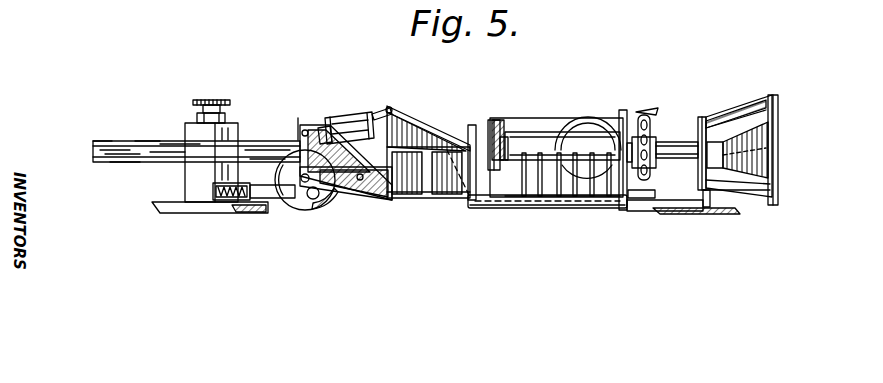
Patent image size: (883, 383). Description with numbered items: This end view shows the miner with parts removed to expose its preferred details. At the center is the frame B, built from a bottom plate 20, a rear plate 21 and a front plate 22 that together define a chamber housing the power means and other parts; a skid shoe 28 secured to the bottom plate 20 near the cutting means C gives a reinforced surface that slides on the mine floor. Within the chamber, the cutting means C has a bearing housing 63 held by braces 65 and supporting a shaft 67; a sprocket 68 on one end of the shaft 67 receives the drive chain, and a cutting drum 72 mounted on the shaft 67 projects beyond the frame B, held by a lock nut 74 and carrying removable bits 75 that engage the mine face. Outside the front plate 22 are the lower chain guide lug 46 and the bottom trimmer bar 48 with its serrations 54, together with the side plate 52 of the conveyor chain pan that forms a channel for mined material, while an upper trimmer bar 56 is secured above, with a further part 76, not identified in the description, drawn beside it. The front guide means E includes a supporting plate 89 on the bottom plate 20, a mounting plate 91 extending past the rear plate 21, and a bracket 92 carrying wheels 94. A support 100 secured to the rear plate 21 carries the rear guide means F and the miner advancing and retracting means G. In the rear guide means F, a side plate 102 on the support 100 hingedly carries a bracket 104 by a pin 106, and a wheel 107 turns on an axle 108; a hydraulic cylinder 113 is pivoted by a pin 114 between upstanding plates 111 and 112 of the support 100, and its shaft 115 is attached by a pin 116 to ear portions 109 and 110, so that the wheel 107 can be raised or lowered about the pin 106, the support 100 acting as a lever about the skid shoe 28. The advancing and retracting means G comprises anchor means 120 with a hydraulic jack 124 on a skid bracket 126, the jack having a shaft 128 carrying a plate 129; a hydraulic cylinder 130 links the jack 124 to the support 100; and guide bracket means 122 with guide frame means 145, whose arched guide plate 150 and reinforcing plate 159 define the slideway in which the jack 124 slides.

The reinforcing plate 159 is at (93, 152).
The guide frame means 145 is at (108, 140).
The arched guide plate 150 is at (145, 141).
The guide bracket means 122 is at (120, 167).
The hydraulic jack 124 is at (190, 178).
The plate 129 is at (213, 101).
The shaft 128 is at (197, 118).
The anchor means 120 is at (207, 76).
The skid bracket 126 is at (215, 210).
The hydraulic cylinder 130 is at (266, 186).
The axle 108 is at (300, 182).
The wheel 107 is at (314, 200).
The pin 106 is at (332, 193).
The side plate 102 is at (362, 181).
The bracket 104 is at (300, 142).
The ear portion 109 is at (305, 129).
The pin 116 is at (299, 118).
The ear portion 110 is at (325, 126).
The shaft 115 is at (345, 117).
The hydraulic cylinder 113 is at (360, 120).
The pin 114 is at (390, 107).
The upstanding plate 112 is at (425, 124).
The upstanding plate 111 is at (398, 118).
The support 100 is at (428, 183).
The mounting plate 91 is at (456, 200).
The rear plate 21 is at (468, 130).
The skid shoe 28 is at (487, 207).
The bottom plate 20 is at (526, 206).
The bracket 92 is at (510, 118).
The sprocket 68 is at (504, 121).
The bearing housing 63 is at (555, 134).
The wheels 94 is at (586, 118).
The braces 65 is at (575, 198).
The supporting plate 89 is at (545, 200).
The front plate 22 is at (623, 120).
The upper trimmer bar 56 is at (645, 114).
The collar 76 is at (650, 138).
The shaft 67 is at (678, 145).
The cutting drum 72 is at (757, 106).
The lock nut 74 is at (765, 163).
The removable bits 75 is at (778, 105).
The side plate 52 is at (720, 206).
The serrations 54 is at (694, 215).
The lower chain guide lug 46 is at (655, 193).
The bottom trimmer bar 48 is at (640, 211).
The miner advancing and retracting means G is at (137, 111).
The rear guide means F is at (320, 224).
The frame B is at (470, 124).
The front guide means E is at (601, 104).
The cutting means C is at (786, 72).